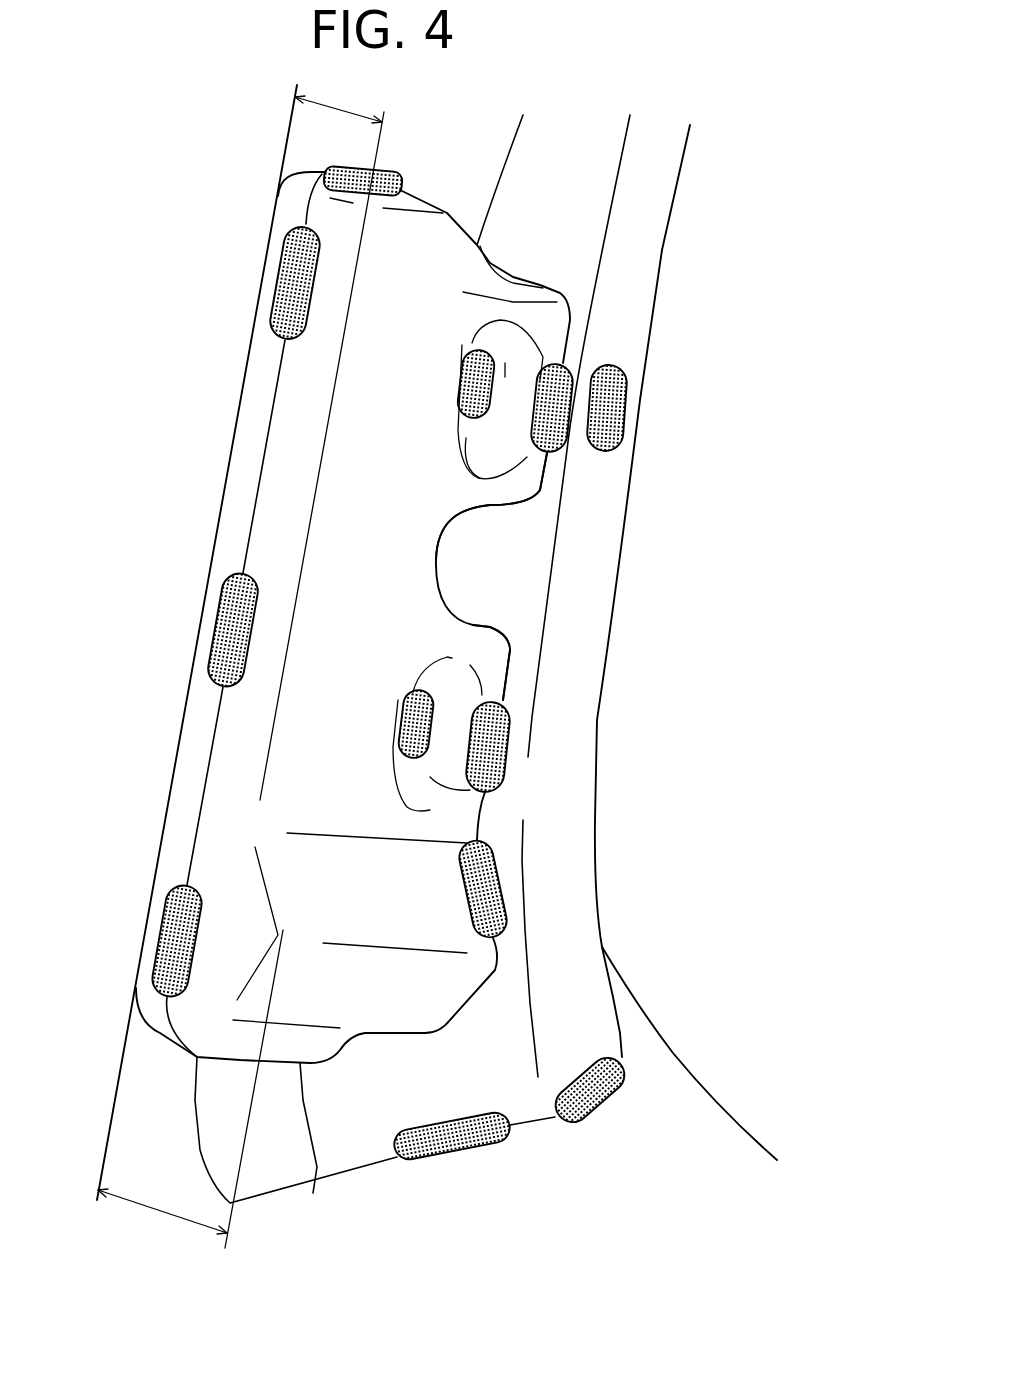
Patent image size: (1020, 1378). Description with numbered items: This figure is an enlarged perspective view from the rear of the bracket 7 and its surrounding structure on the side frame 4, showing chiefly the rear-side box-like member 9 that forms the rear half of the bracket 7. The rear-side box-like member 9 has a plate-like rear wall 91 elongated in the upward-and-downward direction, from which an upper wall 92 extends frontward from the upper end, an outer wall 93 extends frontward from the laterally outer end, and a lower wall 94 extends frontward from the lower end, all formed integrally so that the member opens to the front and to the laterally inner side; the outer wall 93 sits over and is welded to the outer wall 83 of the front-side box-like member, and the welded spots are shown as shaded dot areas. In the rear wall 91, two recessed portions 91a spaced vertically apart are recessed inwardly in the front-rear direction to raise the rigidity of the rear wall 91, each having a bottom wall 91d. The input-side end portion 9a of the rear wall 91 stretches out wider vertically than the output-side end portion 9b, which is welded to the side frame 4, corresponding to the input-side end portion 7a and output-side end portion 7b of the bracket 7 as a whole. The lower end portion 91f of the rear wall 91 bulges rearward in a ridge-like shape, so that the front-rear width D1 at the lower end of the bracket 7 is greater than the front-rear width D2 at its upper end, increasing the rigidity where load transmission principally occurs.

The side frame 4 is at (285, 1162).
The bracket 7 is at (205, 175).
The input-side end portion 7a is at (317, 506).
The output-side end portion 7b is at (592, 662).
The rear-side box-like member 9 is at (338, 1057).
The input-side end portion 9a is at (362, 490).
The output-side end portion 9b is at (477, 648).
The outer wall 83 is at (190, 770).
The rear wall 91 is at (557, 302).
The recessed portion 91a is at (513, 373).
The bottom wall 91d is at (467, 438).
The lower end portion 91f is at (412, 952).
The upper wall 92 is at (412, 203).
The outer wall 93 is at (220, 833).
The lower wall 94 is at (296, 1147).
The width of lower end portion D1 is at (190, 1047).
The width of upper end portion D2 is at (322, 435).